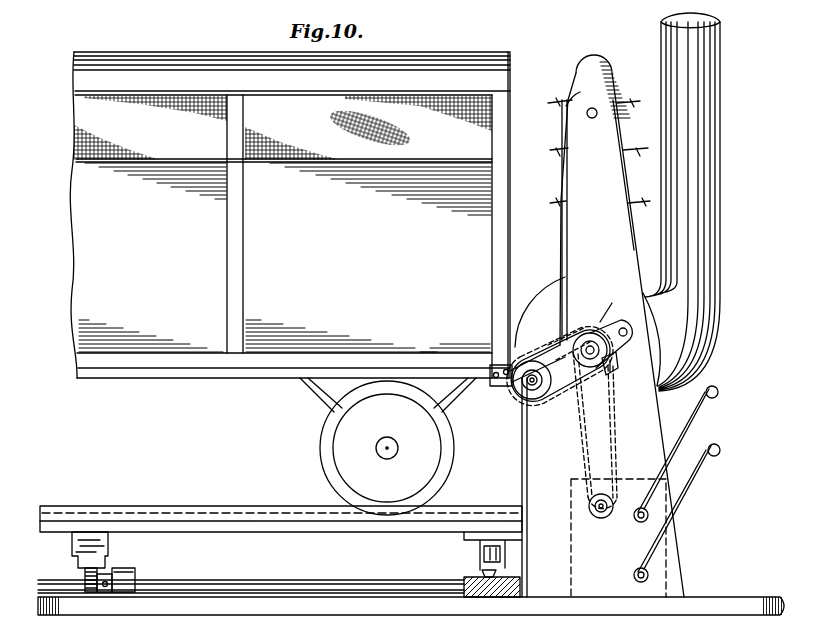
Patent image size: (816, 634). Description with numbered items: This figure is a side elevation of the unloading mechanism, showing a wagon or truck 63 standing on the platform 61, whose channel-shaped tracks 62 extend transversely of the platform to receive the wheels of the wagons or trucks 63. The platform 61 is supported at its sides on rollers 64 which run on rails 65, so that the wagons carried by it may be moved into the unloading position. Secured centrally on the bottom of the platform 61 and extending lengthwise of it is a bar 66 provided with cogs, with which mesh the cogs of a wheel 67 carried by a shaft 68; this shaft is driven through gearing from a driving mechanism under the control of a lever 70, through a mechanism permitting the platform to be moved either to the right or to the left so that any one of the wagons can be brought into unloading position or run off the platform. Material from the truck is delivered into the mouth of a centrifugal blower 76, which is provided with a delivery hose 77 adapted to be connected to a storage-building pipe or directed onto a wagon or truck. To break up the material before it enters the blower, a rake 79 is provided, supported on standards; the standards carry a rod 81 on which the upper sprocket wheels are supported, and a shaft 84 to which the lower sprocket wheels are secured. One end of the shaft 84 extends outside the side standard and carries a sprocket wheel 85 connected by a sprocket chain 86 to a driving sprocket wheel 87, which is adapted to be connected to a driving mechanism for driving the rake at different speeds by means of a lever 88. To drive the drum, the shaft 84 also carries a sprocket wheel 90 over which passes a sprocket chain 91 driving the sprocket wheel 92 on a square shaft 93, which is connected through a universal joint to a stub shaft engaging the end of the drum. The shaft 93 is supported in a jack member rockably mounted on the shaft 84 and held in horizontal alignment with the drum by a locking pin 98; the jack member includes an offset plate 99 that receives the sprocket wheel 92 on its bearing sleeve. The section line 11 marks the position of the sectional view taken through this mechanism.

The section line 11- 11 is at (460, 298).
The platform 61 is at (190, 532).
The tracks 62 is at (173, 506).
The wagons or trucks 63 is at (148, 378).
The rollers 64 is at (478, 551).
The rails 65 is at (490, 572).
The bar 66 is at (75, 557).
The wheel 67 is at (85, 580).
The shaft 68 is at (285, 582).
The lever 70 is at (692, 482).
The centrifugal blower 76 is at (660, 354).
The delivery hose 77 is at (712, 150).
The rake 79 is at (648, 131).
The rod 81 is at (586, 114).
The shaft 84 is at (615, 300).
The sprocket wheel 85 is at (605, 375).
The sprocket chain 86 is at (640, 437).
The driving sprocket wheel 87 is at (598, 518).
The lever 88 is at (706, 410).
The sprocket wheel 90 is at (592, 314).
The sprocket chain 91 is at (552, 345).
The sprocket wheel 92 is at (516, 392).
The square shaft 93 is at (525, 402).
The locking pin 98 is at (604, 318).
The plate 99 is at (532, 392).